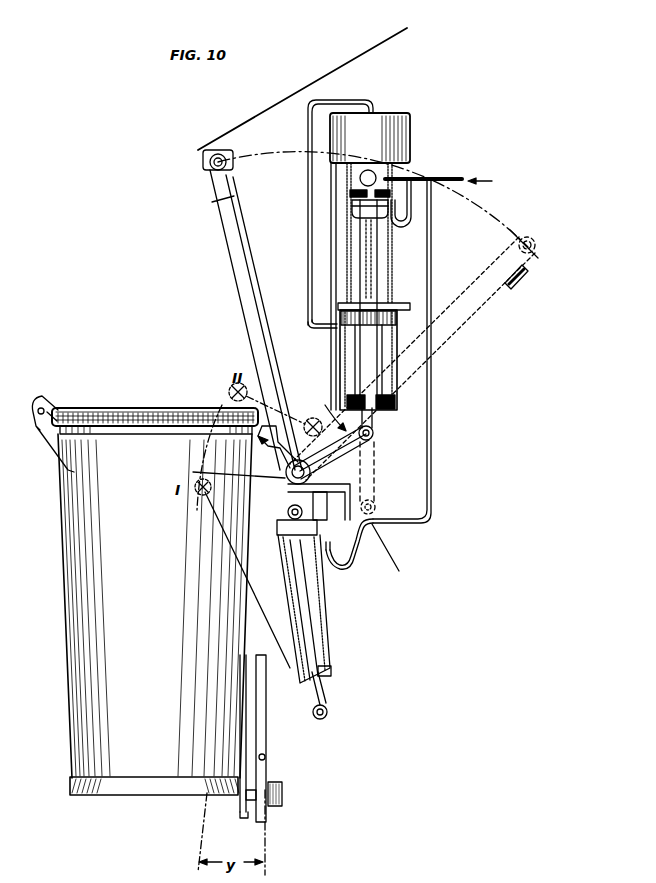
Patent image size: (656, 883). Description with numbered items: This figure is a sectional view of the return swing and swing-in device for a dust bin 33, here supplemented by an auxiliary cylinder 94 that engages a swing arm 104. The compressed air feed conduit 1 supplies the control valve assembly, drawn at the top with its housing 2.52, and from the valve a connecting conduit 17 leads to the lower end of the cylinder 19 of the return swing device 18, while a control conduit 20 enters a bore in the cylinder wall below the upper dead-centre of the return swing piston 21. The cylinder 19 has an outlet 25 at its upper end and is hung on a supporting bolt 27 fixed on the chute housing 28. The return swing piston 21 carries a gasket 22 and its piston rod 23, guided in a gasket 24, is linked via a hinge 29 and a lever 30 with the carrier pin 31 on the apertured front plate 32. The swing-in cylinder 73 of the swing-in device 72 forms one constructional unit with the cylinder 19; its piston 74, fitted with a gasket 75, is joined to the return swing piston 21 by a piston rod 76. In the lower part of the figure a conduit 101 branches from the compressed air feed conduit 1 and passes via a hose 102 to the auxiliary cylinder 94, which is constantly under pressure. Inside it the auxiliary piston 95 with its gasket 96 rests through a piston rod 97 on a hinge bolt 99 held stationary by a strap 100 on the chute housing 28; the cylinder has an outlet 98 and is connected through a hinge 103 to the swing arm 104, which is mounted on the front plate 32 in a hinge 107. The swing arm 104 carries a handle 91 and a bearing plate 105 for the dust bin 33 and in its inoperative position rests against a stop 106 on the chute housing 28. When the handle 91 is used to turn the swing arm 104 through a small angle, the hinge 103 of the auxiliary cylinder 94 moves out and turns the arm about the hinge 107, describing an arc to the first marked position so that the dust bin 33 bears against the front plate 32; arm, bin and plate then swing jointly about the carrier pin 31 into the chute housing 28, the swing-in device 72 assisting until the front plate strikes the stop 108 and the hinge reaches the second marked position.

The compressed air feed conduit 1 is at (455, 178).
The valve unit housing 2.52 is at (399, 110).
The connecting conduit 17 is at (331, 262).
The return swing device 18 is at (324, 410).
The cylinder 19 is at (400, 394).
The control conduit 20 is at (308, 130).
The return swing piston 21 is at (380, 331).
The gasket 22 is at (398, 318).
The piston rod 23 is at (362, 340).
The gasket 24 is at (384, 408).
The outlet 25 is at (392, 302).
The supporting bolt 27 is at (365, 179).
The chute housing 28 is at (203, 150).
The hinge 29 is at (375, 434).
The lever 30 is at (345, 456).
The carrier pin 31 is at (317, 471).
The apertured front plate 32 is at (228, 192).
The dust bin 33 is at (72, 613).
The swing-in device 72 is at (344, 223).
The swing-in cylinder 73 is at (391, 254).
The piston 74 is at (388, 232).
The gasket 75 is at (394, 222).
The piston rod 76 is at (391, 268).
The handle 91 is at (266, 757).
The auxiliary cylinder 94 is at (322, 600).
The auxiliary piston 95 is at (346, 551).
The gasket 96 is at (314, 533).
The piston rod 97 is at (313, 627).
The outlet 98 is at (330, 670).
The hinge bolt 99 is at (328, 713).
The strap 100 is at (352, 490).
The conduit 101 is at (432, 410).
The hose 102 is at (343, 568).
The hinge 103 is at (228, 393).
The swing arm 104 is at (268, 722).
The bearing plate 105 is at (241, 816).
The stop 106 is at (283, 790).
The hinge 107 is at (270, 426).
The stop 108 is at (527, 270).